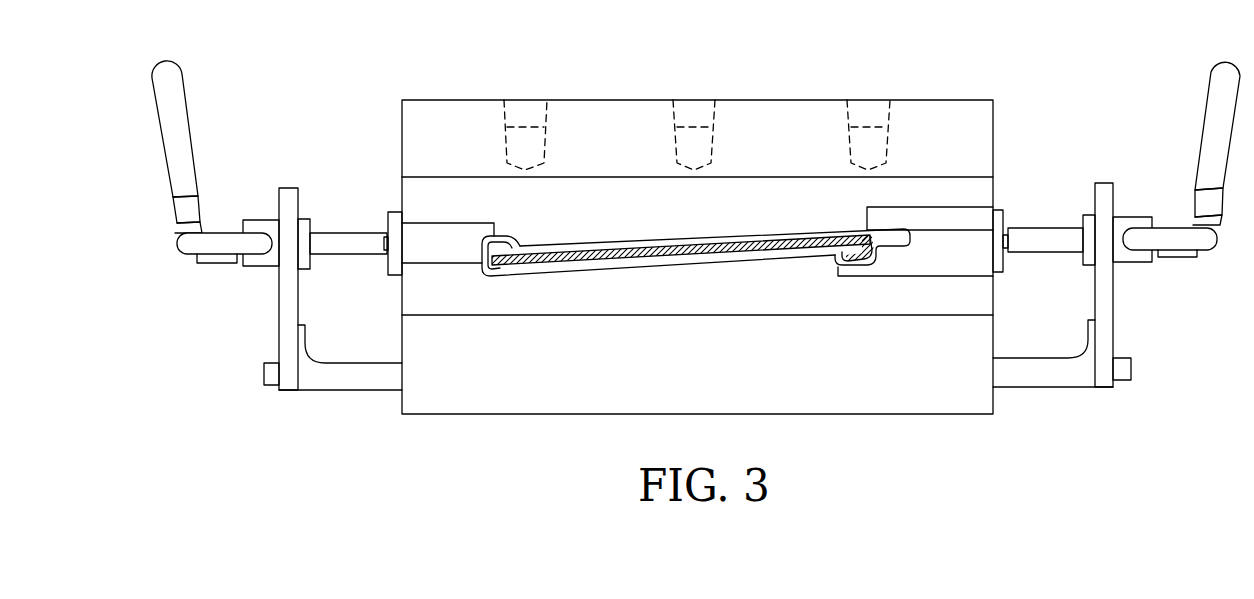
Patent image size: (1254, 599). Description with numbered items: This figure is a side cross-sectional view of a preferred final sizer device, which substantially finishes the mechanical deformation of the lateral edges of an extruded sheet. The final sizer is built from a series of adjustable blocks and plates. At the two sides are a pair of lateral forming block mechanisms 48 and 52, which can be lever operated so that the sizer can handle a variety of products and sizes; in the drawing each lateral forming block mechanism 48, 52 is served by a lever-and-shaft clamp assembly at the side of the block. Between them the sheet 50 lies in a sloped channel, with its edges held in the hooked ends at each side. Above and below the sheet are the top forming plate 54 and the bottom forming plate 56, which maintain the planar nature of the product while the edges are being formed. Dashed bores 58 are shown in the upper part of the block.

The lateral forming block mechanism 48 is at (447, 243).
The laminated sheet / panel 50 is at (642, 242).
The lateral forming block mechanism 52 is at (950, 252).
The top forming plate 54 is at (790, 208).
The bottom forming plate 56 is at (788, 285).
The holes / bores 58 is at (522, 117).